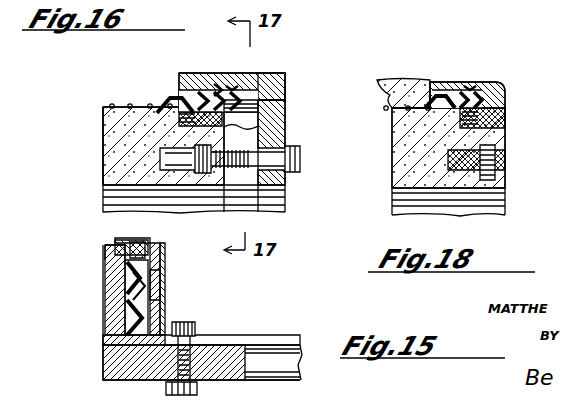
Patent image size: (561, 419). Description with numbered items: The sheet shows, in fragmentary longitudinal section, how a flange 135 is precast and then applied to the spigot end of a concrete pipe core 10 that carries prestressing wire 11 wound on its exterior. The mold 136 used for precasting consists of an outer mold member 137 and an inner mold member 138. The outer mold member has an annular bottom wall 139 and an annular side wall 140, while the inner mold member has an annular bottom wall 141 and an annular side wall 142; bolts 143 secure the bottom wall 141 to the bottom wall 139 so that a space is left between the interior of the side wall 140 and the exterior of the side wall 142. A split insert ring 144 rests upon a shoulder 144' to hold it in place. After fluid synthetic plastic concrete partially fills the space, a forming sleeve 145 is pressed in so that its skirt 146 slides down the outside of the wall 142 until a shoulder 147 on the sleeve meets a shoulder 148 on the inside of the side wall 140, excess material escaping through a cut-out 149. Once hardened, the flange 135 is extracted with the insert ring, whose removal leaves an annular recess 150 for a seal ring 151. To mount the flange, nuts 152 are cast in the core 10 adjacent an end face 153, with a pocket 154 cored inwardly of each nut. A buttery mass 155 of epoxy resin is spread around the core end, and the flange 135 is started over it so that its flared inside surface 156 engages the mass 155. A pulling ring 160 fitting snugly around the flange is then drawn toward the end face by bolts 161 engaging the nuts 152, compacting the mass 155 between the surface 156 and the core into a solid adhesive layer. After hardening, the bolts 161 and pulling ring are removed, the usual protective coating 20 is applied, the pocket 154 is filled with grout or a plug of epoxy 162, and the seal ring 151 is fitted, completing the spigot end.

In FIG. 16, the core 10 is at (104, 134).
In FIG. 18, the core 10 is at (402, 154).
In FIG. 16, the prestressing wire 11 is at (110, 106).
In FIG. 18, the prestressing wire 11 is at (386, 112).
In FIG. 18, the protective coating 20 is at (394, 82).
In FIG. 16, the flange 135 is at (255, 78).
In FIG. 15, the flange 135 is at (130, 323).
In FIG. 18, the flange 135 is at (494, 86).
In FIG. 15, the mold 136 is at (71, 346).
In FIG. 15, the outer mold member 137 is at (93, 371).
In FIG. 15, the inner mold member 138 is at (166, 306).
In FIG. 15, the annular bottom wall 139 is at (220, 378).
In FIG. 15, the annular side wall 140 is at (118, 272).
In FIG. 15, the annular bottom wall 141 is at (208, 336).
In FIG. 15, the annular side wall 142 is at (162, 260).
In FIG. 15, the bolts 143 is at (170, 384).
In FIG. 15, the split insert ring 144 is at (98, 279).
In FIG. 15, the shoulder 144' is at (100, 292).
In FIG. 15, the forming sleeve 145 is at (150, 245).
In FIG. 15, the skirt 146 is at (160, 286).
In FIG. 15, the shoulder 147 is at (138, 242).
In FIG. 15, the shoulder 148 is at (128, 242).
In FIG. 15, the cut-out 149 is at (115, 262).
In FIG. 16, the annular recess 150 is at (233, 86).
In FIG. 16, the seal ring 151 is at (220, 82).
In FIG. 18, the seal ring 151 is at (470, 88).
In FIG. 16, the nuts 152 is at (236, 128).
In FIG. 16, the end face 153 is at (286, 132).
In FIG. 16, the pocket 154 is at (160, 158).
In FIG. 18, the pocket 154 is at (468, 180).
In FIG. 16, the mass 155 is at (170, 95).
In FIG. 18, the mass 155 is at (440, 90).
In FIG. 16, the flared inside surface 156 is at (250, 105).
In FIG. 16, the pulling ring 160 is at (284, 82).
In FIG. 16, the bolts 161 is at (300, 172).
In FIG. 18, the plug of epoxy 162 is at (500, 164).